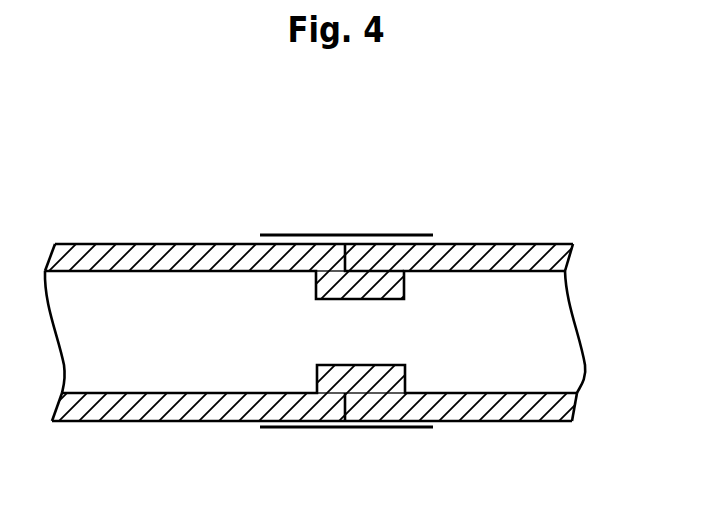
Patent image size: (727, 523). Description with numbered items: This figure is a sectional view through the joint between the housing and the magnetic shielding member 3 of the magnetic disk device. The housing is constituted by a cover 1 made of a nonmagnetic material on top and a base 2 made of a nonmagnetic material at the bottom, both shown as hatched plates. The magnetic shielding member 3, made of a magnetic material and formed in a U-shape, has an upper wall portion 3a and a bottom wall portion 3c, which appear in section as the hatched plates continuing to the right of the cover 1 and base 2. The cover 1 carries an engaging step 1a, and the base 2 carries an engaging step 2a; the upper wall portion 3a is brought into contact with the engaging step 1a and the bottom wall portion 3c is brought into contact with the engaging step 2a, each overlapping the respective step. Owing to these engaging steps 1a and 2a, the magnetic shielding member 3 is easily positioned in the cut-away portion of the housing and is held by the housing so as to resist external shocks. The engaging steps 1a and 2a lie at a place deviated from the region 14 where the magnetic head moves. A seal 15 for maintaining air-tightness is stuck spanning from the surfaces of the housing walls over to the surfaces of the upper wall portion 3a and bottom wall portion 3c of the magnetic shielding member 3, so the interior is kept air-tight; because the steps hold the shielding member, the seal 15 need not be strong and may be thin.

The cover 1 is at (153, 258).
The engaging step 1a is at (365, 299).
The base 2 is at (147, 407).
The engaging step 2a is at (372, 365).
The magnetic shielding member 3 is at (545, 244).
The upper wall portion 3a is at (487, 244).
The bottom wall portion 3c is at (527, 413).
The region where the magnetic head moves 14 is at (385, 430).
The seal 15 is at (317, 234).